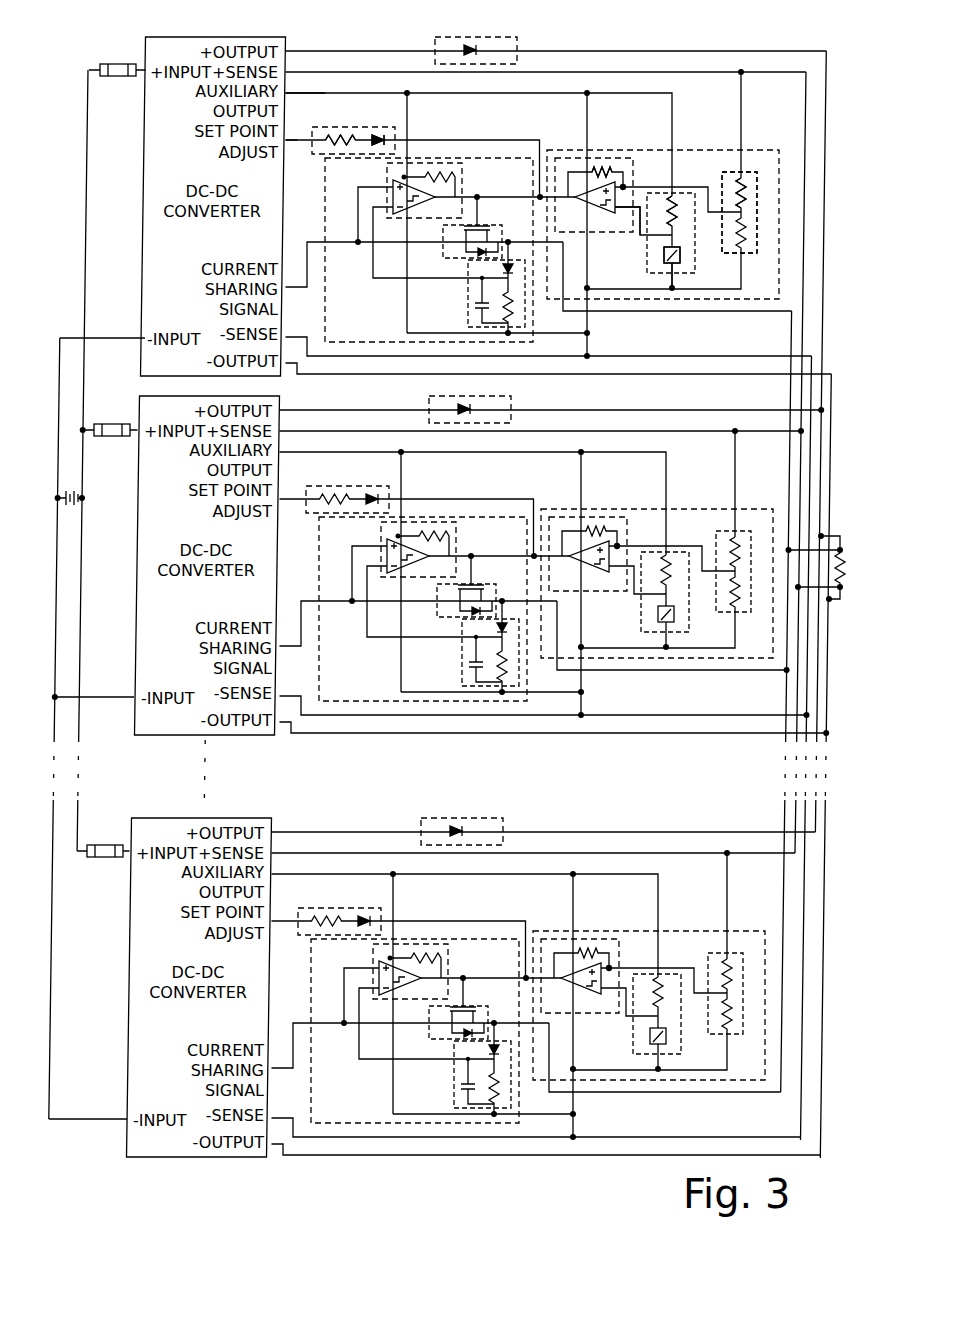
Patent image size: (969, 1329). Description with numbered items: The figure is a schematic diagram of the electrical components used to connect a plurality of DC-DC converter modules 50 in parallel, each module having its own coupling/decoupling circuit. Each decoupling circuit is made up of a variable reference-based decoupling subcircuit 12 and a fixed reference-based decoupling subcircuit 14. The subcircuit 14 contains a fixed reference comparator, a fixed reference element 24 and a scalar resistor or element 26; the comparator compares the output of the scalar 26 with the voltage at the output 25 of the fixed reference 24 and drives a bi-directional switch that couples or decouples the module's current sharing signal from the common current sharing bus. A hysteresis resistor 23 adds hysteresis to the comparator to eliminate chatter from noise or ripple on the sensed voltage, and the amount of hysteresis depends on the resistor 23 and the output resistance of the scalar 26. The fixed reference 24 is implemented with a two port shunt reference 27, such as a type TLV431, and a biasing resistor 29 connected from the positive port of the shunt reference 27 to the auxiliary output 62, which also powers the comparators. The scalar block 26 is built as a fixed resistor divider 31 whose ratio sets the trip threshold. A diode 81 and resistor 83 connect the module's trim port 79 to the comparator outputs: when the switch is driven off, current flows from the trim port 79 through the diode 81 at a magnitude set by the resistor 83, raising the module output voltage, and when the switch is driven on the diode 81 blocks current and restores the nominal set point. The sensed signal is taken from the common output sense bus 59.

The variable reference-based decoupling subcircuit 12 is at (429, 250).
The fixed reference-based decoupling subcircuit 14 is at (663, 242).
The hysteresis resistor 23 is at (609, 167).
The fixed reference element 24 is at (687, 278).
The fixed reference output 25 is at (638, 236).
The scalar resistor or element 26 is at (750, 170).
The two port shunt reference 27 is at (683, 258).
The biasing resistor 29 is at (678, 208).
The fixed resistor divider 31 is at (750, 194).
The converter module 50 is at (173, 206).
The common output sense bus 59 is at (834, 390).
The auxiliary output terminal 62 is at (291, 94).
The trim port 79 is at (288, 141).
The diode 81 is at (379, 138).
The resistor 83 is at (343, 131).